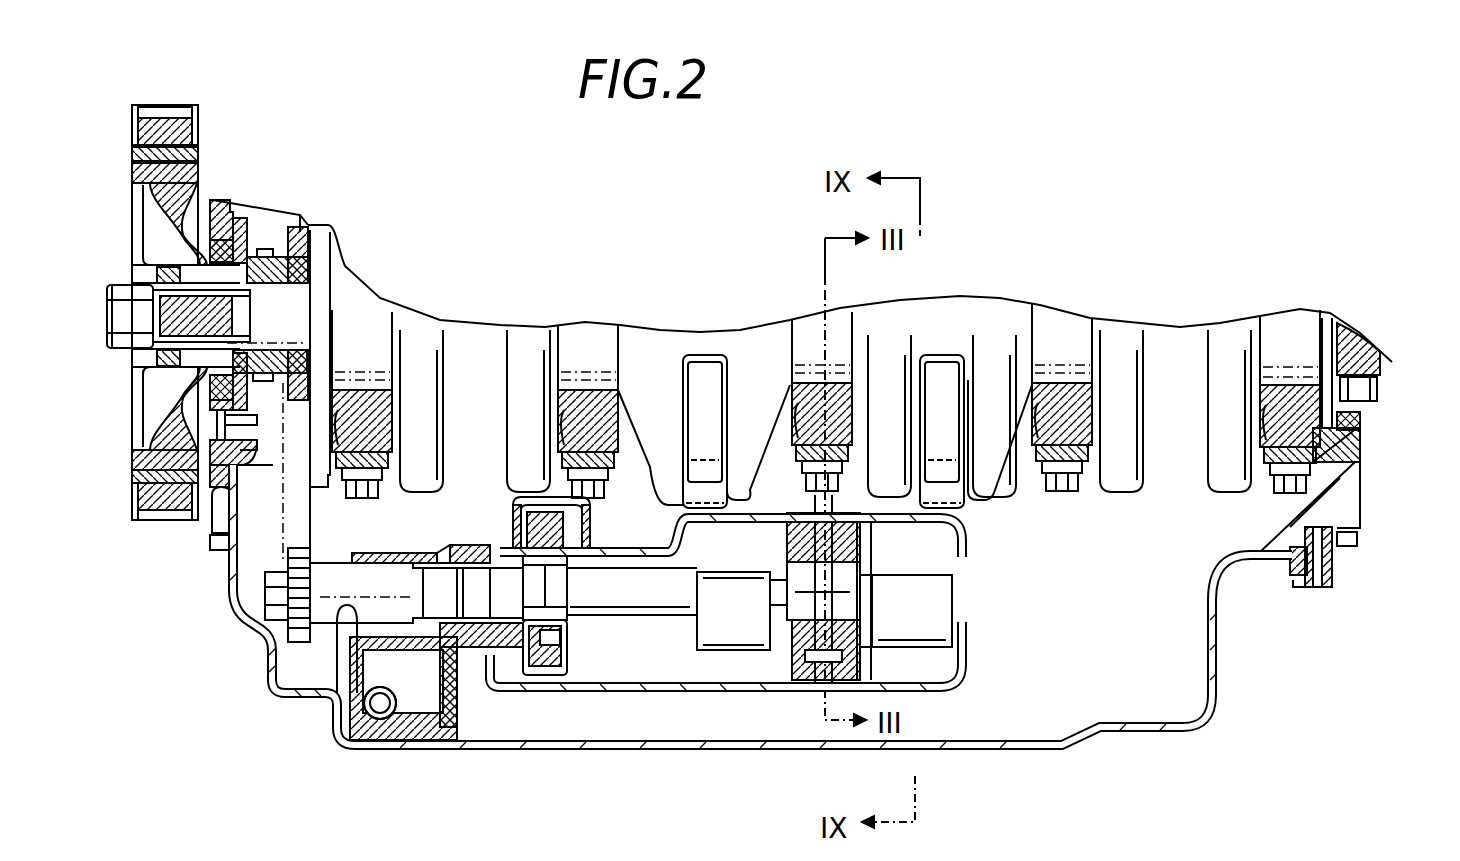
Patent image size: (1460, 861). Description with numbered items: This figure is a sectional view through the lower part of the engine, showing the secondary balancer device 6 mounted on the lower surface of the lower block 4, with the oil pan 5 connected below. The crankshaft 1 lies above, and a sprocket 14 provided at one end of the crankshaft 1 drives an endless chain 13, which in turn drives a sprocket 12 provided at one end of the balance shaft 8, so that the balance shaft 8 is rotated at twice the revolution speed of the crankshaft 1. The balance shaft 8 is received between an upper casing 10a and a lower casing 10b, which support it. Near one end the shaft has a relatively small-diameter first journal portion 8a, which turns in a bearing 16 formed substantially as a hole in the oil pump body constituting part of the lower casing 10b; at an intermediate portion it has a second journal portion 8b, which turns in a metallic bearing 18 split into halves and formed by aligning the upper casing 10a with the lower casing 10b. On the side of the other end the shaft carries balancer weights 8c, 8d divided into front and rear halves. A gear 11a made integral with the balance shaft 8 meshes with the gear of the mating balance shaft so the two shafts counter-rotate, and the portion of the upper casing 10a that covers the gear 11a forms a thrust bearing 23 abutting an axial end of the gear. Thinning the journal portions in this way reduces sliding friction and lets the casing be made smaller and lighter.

The crankshaft 1 is at (378, 300).
The lower block 4 is at (1362, 433).
The oil pan 5 is at (1218, 653).
The secondary balancer device 6 is at (986, 635).
The balance shaft 8 is at (647, 618).
The first journal portion 8a is at (377, 580).
The second journal portion 8b is at (848, 560).
The balancer weight 8c is at (720, 653).
The balancer weight 8d is at (890, 645).
The upper casing 10a is at (973, 538).
The lower casing 10b is at (947, 692).
The gear 11a is at (567, 653).
The sprocket 12 is at (280, 633).
The endless chain 13 is at (273, 527).
The sprocket 14 is at (300, 218).
The bearing 16 is at (346, 612).
The bearing 18 is at (820, 607).
The thrust bearing 23 is at (555, 583).